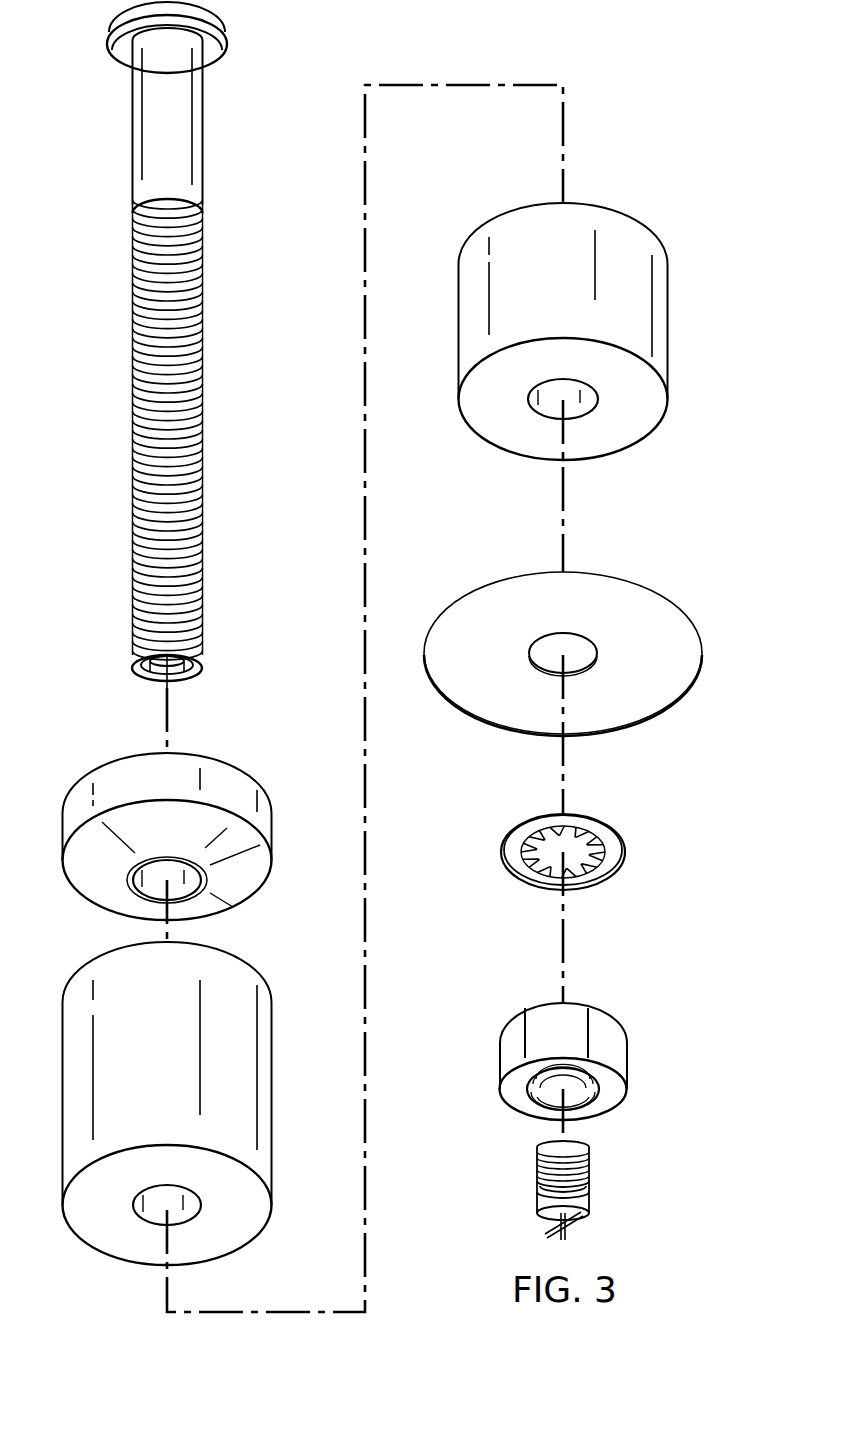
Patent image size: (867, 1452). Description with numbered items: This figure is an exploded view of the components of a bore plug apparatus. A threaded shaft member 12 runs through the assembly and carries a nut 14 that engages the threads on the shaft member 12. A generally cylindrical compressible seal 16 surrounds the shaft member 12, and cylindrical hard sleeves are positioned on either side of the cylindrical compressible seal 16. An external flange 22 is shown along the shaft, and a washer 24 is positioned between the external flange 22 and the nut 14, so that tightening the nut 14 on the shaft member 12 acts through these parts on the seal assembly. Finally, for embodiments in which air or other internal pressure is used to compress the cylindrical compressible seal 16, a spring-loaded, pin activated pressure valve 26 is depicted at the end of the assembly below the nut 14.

The shaft member 12 is at (107, 42).
The nut 14 is at (627, 1060).
The cylindrical compressible seal 16 is at (62, 1090).
The external flange 22 is at (702, 652).
The washer 24 is at (625, 852).
The spring-loaded, pin activated pressure valve 26 is at (589, 1175).